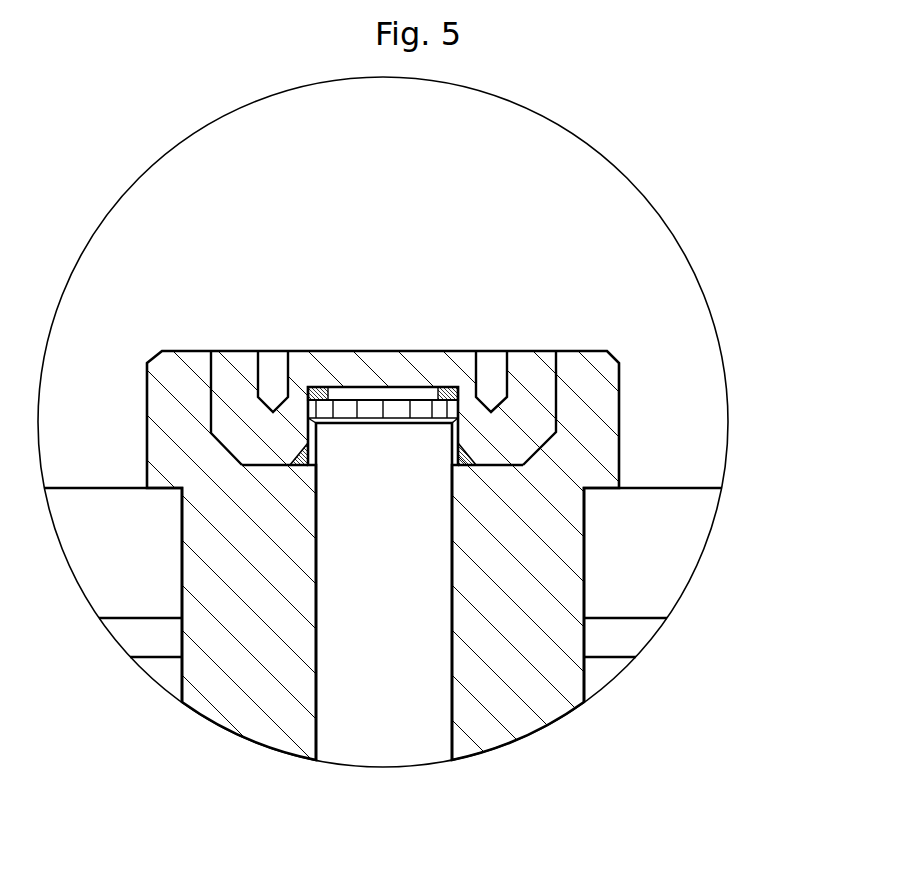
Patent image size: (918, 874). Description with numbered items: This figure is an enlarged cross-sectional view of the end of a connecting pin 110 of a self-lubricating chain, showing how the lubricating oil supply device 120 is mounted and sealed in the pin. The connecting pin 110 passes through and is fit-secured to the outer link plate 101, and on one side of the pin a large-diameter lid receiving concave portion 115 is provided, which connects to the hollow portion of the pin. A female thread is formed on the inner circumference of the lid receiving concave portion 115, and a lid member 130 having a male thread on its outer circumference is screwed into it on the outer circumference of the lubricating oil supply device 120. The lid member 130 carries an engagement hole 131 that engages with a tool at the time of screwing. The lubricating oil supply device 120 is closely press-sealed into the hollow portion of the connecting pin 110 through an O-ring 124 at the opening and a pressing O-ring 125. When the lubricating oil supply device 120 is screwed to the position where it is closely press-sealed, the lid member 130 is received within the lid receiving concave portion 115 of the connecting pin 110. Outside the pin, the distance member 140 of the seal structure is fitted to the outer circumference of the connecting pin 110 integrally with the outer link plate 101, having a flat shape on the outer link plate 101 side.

The outer link plate 101 is at (657, 500).
The connecting pin 110 is at (528, 660).
The lid receiving concave portion 115 is at (268, 465).
The lubricating oil supply device 120 is at (400, 663).
The O-ring 124 is at (300, 448).
The pressing O-ring 125 is at (312, 387).
The lid member 130 is at (400, 364).
The engagement hole 131 is at (492, 362).
The distance member 140 is at (613, 633).